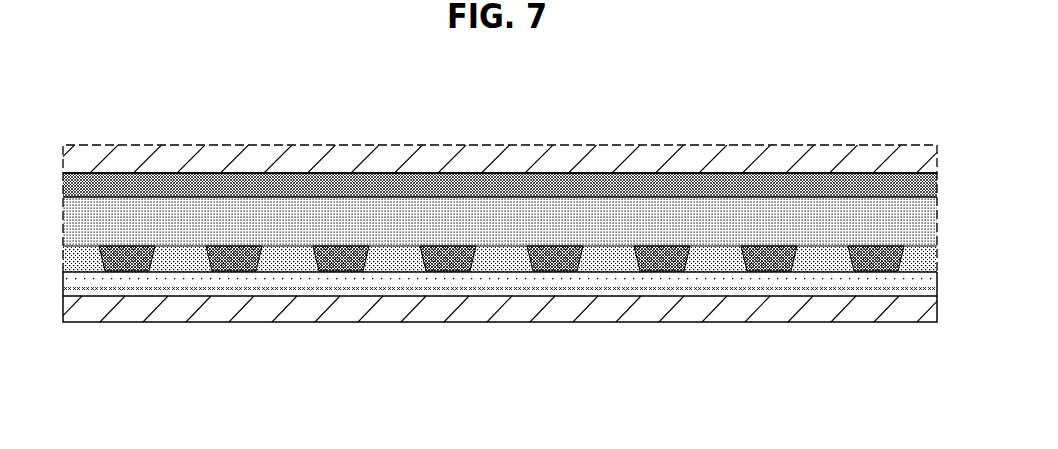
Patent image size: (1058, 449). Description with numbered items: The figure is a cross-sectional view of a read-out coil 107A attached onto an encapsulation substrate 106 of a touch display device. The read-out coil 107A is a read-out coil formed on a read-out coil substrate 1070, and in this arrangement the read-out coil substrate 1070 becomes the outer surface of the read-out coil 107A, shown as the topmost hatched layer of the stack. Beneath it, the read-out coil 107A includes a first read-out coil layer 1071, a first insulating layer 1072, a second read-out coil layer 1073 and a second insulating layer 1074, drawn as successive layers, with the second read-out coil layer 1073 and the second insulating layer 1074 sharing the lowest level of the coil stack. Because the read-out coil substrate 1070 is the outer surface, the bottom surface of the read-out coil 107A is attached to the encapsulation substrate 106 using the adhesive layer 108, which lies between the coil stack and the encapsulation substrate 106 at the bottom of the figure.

The read-out coil 107A is at (170, 146).
The read-out coil substrate 1070 is at (568, 172).
The first read-out coil layer 1071 is at (293, 180).
The first insulating layer 1072 is at (418, 217).
The second read-out coil layer 1073 is at (442, 272).
The second insulating layer 1074 is at (490, 272).
The encapsulation substrate 106 is at (168, 308).
The adhesive layer 108 is at (653, 282).